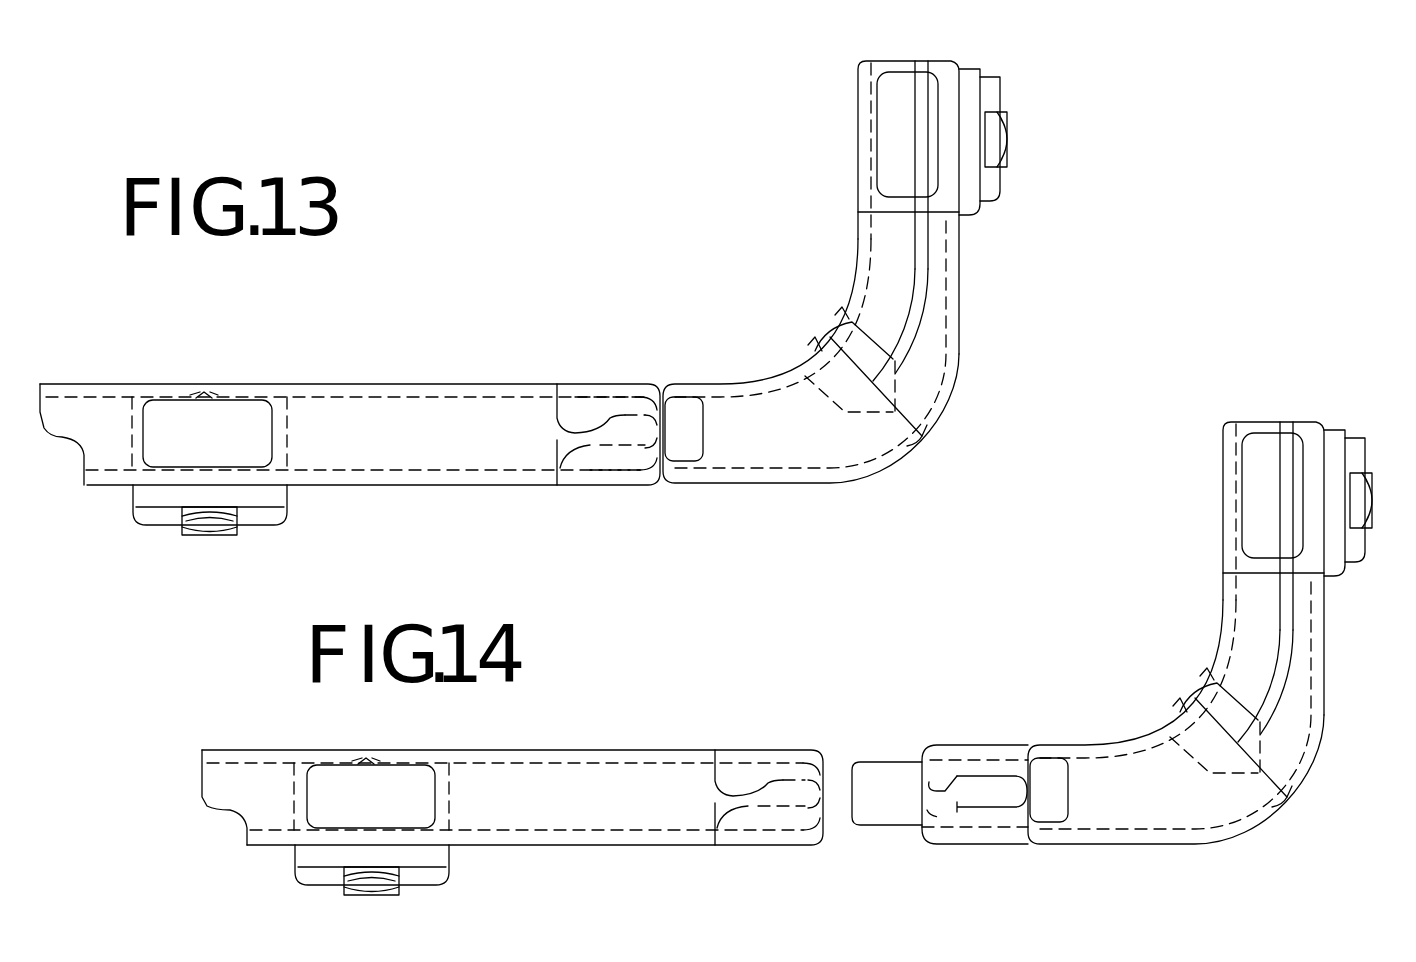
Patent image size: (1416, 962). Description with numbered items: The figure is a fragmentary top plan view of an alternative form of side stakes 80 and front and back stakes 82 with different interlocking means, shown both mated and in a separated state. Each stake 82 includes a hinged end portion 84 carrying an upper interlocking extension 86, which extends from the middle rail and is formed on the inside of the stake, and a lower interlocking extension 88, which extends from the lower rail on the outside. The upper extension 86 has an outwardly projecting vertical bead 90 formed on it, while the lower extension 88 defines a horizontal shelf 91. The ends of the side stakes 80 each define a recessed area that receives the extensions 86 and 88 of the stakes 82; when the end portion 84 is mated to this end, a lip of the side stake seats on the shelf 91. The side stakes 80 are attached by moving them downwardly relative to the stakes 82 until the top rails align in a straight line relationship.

In FIG. 13, the side stake 80 is at (332, 380).
In FIG. 14, the side stake 80 is at (535, 852).
In FIG. 13, the front and back stake 82 is at (848, 228).
In FIG. 14, the front and back stake 82 is at (1207, 617).
In FIG. 13, the hinged end portion 84 is at (807, 452).
In FIG. 14, the hinged end portion 84 is at (1128, 763).
In FIG. 14, the upper interlocking extension 86 is at (978, 750).
In FIG. 14, the lower interlocking extension 88 is at (983, 830).
In FIG. 14, the vertical bead 90 is at (932, 796).
In FIG. 14, the horizontal shelf 91 is at (975, 793).